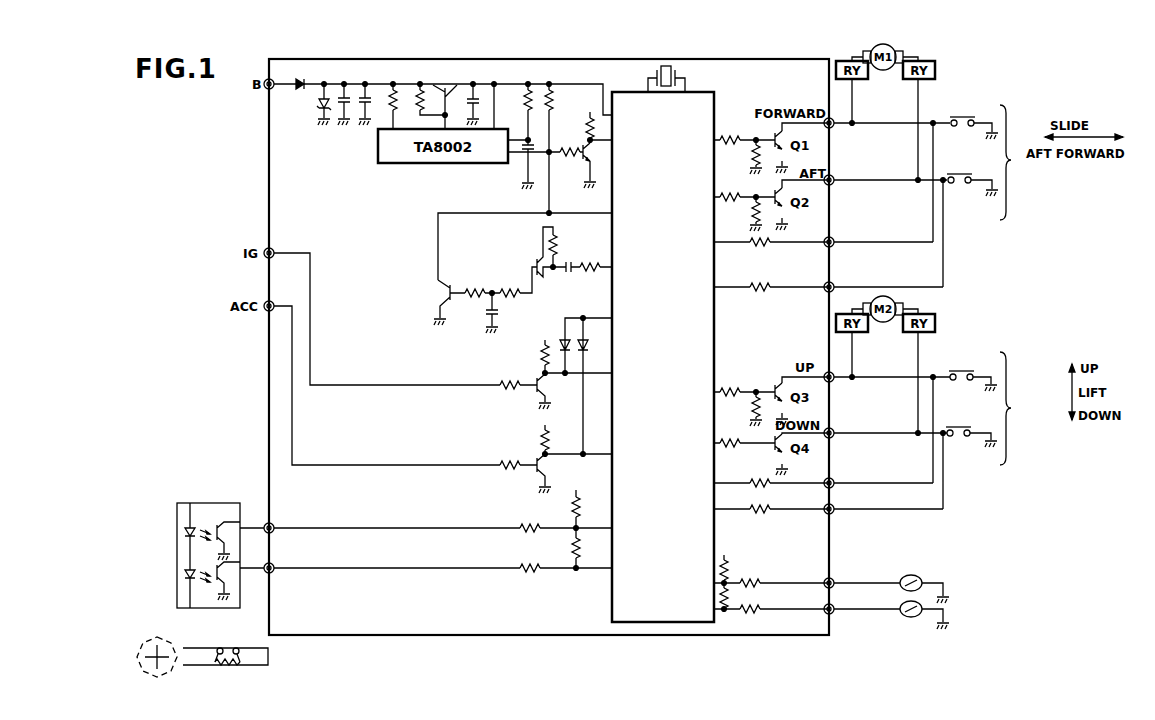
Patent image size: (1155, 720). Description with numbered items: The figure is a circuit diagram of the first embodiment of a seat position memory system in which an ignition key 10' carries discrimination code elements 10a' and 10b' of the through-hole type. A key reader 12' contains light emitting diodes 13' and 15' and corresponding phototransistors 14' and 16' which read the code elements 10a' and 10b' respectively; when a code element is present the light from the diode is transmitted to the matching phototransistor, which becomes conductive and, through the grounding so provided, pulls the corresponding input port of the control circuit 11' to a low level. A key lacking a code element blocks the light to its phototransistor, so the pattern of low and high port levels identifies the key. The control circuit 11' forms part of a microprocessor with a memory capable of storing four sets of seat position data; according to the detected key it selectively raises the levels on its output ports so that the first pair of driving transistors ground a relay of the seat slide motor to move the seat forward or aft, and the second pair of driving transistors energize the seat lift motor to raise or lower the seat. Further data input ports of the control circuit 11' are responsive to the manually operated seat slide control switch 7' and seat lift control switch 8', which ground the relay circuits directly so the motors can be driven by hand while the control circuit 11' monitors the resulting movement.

The seat slide control switch 7' is at (990, 162).
The seat lift control switch 8' is at (989, 412).
The ignition key 10' is at (226, 666).
The discrimination code element 10a' is at (207, 671).
The discrimination code element 10b' is at (256, 671).
The control circuit 11' is at (637, 344).
The key reader 12' is at (194, 558).
The light emitting diode 13' is at (199, 515).
The phototransistor 14' is at (231, 521).
The light emitting diode 15' is at (197, 591).
The phototransistor 16' is at (227, 598).